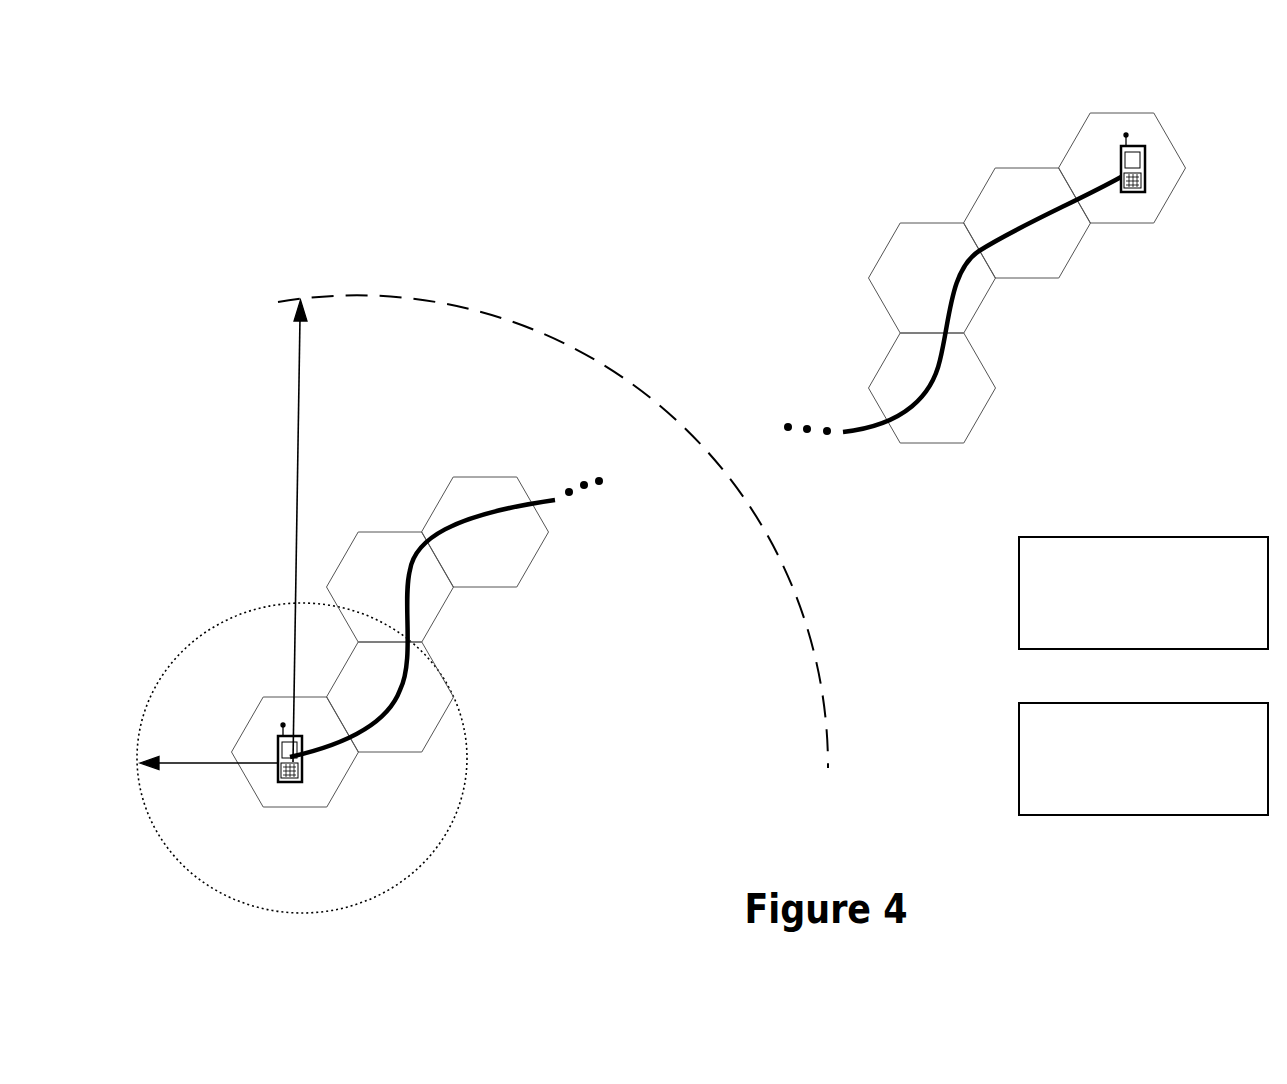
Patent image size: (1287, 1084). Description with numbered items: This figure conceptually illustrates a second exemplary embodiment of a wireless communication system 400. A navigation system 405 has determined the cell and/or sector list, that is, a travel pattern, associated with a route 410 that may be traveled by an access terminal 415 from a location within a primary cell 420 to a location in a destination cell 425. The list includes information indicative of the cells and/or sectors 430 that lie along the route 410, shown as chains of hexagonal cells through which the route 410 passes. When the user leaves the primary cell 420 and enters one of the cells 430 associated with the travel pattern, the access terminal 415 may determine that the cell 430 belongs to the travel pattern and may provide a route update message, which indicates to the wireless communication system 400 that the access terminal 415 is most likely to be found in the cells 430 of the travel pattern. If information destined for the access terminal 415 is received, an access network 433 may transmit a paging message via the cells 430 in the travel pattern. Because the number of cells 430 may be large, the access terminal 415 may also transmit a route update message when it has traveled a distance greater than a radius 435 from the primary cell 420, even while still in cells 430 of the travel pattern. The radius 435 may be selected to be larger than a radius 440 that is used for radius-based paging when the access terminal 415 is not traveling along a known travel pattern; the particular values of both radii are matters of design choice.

The wireless communication system 400 is at (416, 162).
The navigation system 405 is at (1160, 801).
The route 410 is at (403, 672).
The access terminal 415 is at (294, 782).
The primary cell 420 is at (273, 808).
The destination cell 425 is at (1136, 113).
The cells and/or sectors 430 is at (492, 477).
The access network 433 is at (1160, 624).
The radius 435 is at (297, 472).
The radius 440 is at (207, 763).